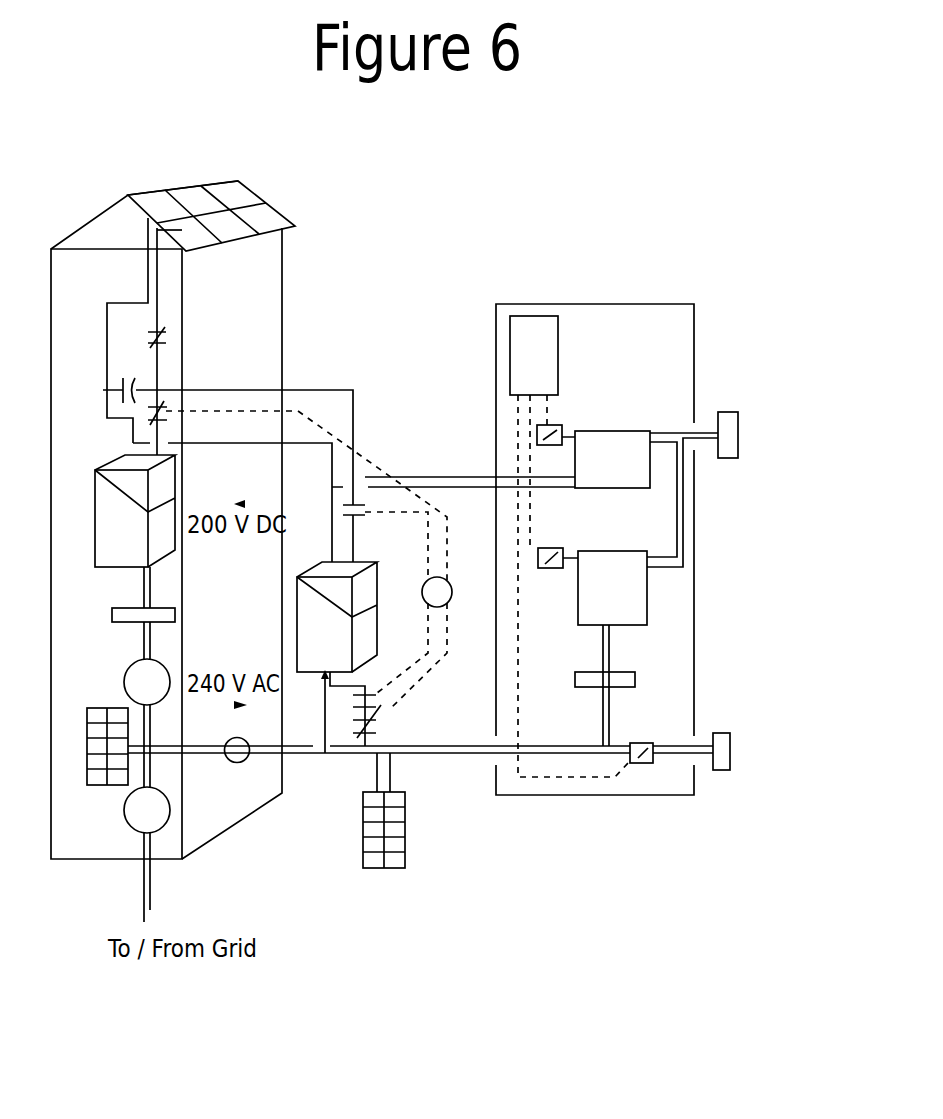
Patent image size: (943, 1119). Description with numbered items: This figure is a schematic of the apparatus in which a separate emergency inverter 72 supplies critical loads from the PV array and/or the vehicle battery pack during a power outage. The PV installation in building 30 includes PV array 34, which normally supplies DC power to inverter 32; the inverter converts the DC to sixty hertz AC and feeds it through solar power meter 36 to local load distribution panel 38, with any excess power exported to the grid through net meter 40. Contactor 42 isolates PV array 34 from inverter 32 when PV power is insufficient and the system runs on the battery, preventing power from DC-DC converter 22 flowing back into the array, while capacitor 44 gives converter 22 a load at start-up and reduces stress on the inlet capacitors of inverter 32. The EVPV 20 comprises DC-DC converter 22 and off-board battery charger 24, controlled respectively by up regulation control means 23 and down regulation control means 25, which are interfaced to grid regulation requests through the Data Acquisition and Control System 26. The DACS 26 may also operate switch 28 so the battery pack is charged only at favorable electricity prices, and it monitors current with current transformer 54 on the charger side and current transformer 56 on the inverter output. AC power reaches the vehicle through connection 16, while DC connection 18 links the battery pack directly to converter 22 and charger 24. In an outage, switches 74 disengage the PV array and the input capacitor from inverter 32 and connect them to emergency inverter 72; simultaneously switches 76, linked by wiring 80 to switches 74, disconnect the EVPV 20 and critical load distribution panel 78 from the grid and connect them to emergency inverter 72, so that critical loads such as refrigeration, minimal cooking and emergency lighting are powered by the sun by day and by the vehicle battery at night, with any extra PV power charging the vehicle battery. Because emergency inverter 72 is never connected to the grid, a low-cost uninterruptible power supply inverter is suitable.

The connection 16 is at (731, 763).
The DC connection 18 is at (735, 413).
The EVPV 20 is at (670, 377).
The DC-DC converter 22 is at (631, 478).
The up regulation control means 23 is at (557, 423).
The off-board battery charger 24 is at (628, 604).
The down regulation control means 25 is at (562, 548).
The Data Acquisition and Control System 26 is at (530, 315).
The switch 28 is at (643, 763).
The building 30 is at (252, 296).
The inverter 32 is at (172, 473).
The PV array 34 is at (263, 203).
The solar power meter 36 is at (125, 658).
The local load distribution panel 38 is at (87, 704).
The net meter 40 is at (123, 807).
The contactor 42 is at (162, 331).
The capacitor 44 is at (138, 376).
The current transformer 54 is at (575, 672).
The current transformer 56 is at (125, 603).
The emergency inverter 72 is at (361, 561).
The switches 74 is at (238, 389).
The switches 76 is at (390, 710).
The critical load distribution panel 78 is at (405, 817).
The wiring 80 is at (437, 578).